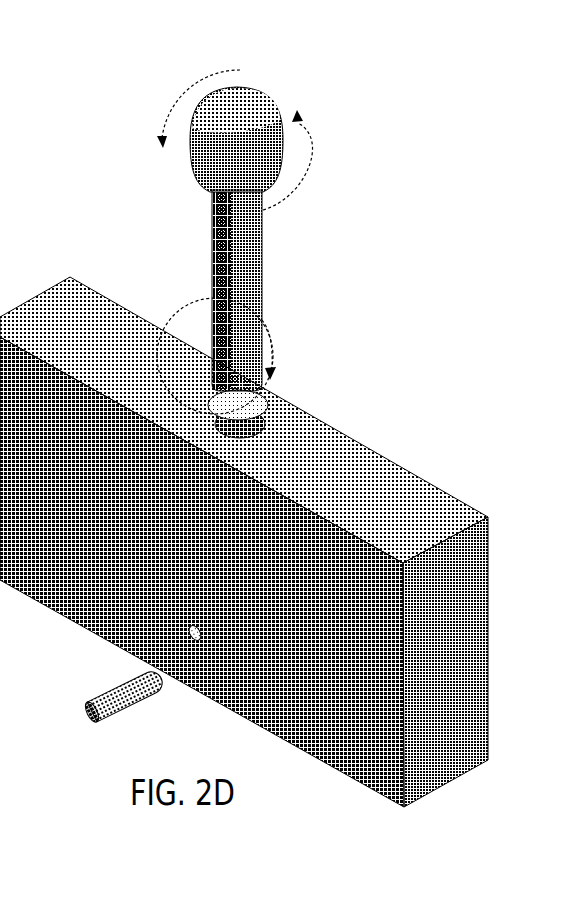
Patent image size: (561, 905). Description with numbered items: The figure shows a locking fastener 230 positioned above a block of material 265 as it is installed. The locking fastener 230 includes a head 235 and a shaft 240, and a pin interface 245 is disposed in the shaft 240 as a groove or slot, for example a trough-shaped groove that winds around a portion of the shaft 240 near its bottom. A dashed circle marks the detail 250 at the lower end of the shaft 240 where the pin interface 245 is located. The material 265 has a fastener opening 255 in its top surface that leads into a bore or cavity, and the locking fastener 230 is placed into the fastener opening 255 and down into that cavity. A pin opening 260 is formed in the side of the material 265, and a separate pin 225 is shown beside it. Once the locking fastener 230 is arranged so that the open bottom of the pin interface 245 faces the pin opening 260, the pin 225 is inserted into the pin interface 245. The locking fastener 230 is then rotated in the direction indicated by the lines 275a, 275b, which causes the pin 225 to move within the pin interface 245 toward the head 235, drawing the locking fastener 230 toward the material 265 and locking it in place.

The pin 225 is at (88, 726).
The locking fastener 230 is at (285, 219).
The head 235 is at (256, 92).
The shaft 240 is at (262, 284).
The pin interface 245 is at (213, 356).
The detail 250 is at (274, 343).
The fastener opening 255 is at (251, 403).
The pin opening 260 is at (189, 634).
The material 265 is at (380, 456).
The rotation direction line 275a is at (203, 68).
The rotation direction line 275b is at (296, 190).